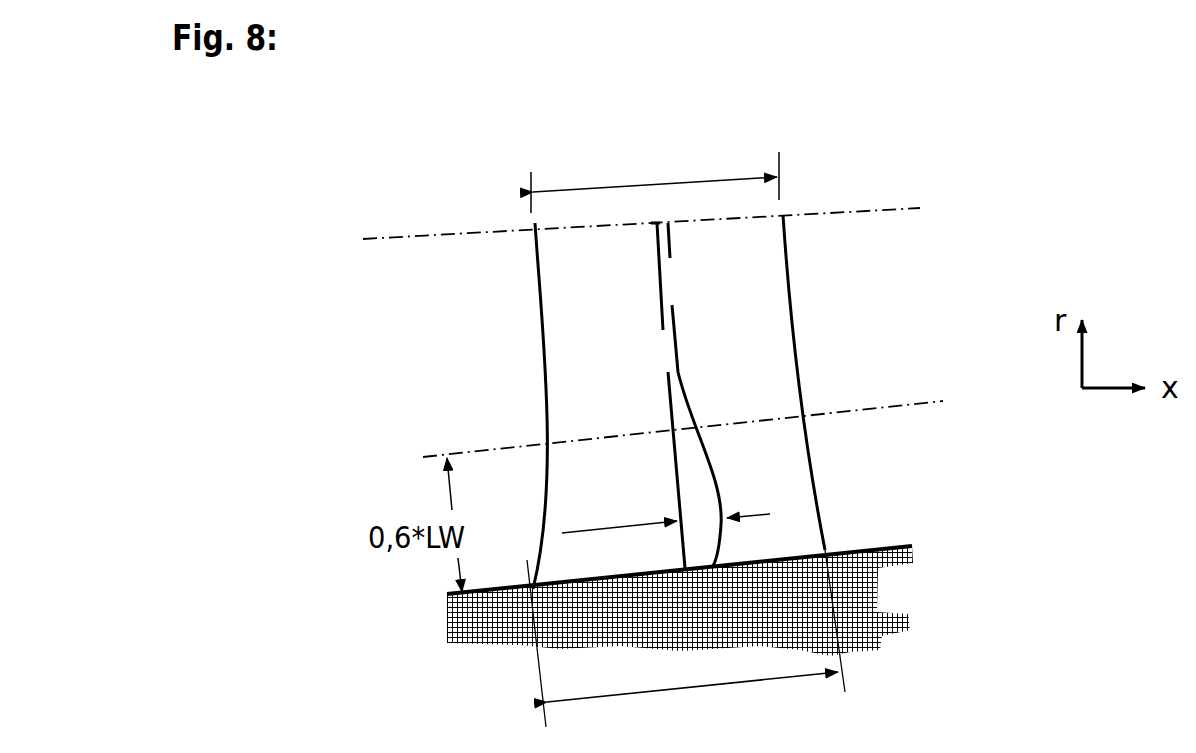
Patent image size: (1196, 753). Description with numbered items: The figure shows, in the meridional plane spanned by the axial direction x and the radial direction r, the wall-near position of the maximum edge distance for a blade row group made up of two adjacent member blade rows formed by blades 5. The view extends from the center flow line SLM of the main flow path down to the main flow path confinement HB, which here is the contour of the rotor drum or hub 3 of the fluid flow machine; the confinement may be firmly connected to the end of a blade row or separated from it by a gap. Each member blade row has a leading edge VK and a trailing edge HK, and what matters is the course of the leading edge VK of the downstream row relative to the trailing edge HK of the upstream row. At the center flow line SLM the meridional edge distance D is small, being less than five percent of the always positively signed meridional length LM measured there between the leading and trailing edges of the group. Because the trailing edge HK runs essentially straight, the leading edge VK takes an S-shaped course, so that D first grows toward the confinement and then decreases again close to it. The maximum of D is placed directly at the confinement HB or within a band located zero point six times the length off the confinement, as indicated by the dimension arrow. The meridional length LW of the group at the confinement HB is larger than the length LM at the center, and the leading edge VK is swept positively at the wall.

The blade/blade row 5 is at (570, 293).
The rotor drum (hub) 3 is at (690, 629).
The main flow path confinement HB is at (886, 664).
The center flow line SLM is at (685, 210).
The meridional length in the main flow path center LM is at (655, 173).
The meridional length at the main flow path confinement LW is at (692, 704).
The trailing edge HK is at (641, 395).
The leading edge VK is at (710, 394).
The meridional edge distance D is at (666, 510).